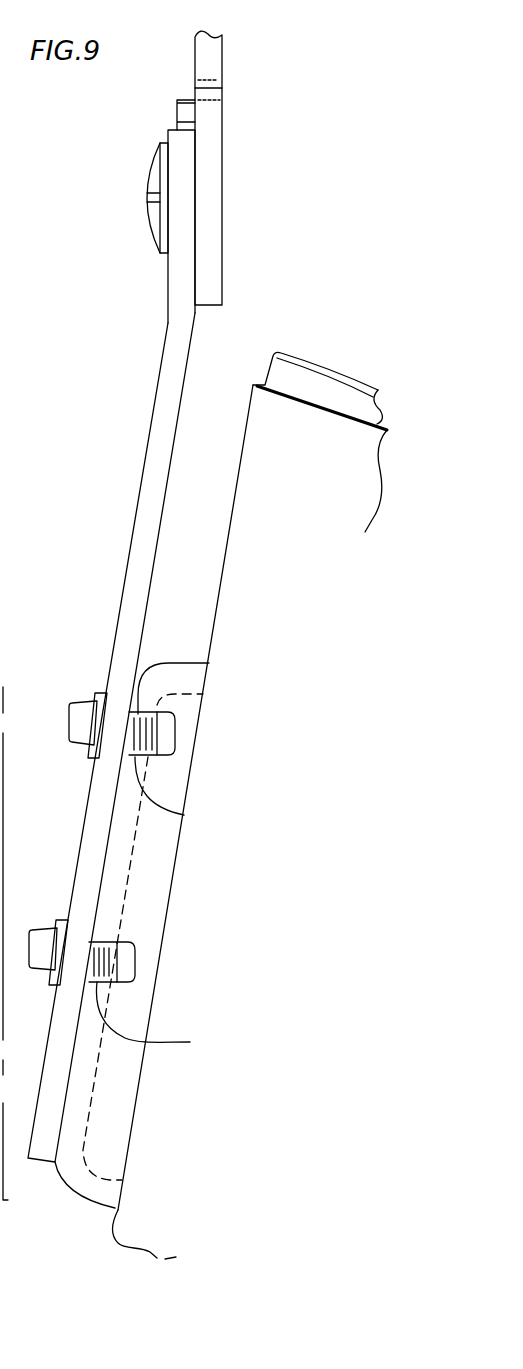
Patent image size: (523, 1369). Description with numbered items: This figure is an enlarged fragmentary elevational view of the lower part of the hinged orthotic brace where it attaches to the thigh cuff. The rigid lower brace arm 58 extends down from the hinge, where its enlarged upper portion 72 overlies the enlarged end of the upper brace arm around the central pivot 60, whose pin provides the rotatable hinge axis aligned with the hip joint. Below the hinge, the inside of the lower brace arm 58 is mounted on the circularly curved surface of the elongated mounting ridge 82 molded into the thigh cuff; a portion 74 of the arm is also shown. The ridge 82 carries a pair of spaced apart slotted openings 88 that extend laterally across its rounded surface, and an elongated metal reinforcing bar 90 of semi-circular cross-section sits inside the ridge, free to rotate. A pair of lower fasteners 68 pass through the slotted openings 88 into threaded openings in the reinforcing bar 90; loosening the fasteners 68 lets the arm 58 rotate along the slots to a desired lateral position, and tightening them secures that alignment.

The lower brace arm 58 is at (150, 489).
The central pivot 60 is at (150, 226).
The lower fasteners 68 is at (87, 708).
The enlarged upper portion of the lower brace arm 72 is at (208, 160).
The mounting plate 74 is at (185, 227).
The mounting ridge 82 is at (162, 917).
The slotted openings 88 is at (184, 815).
The reinforcing bar 90 is at (167, 735).